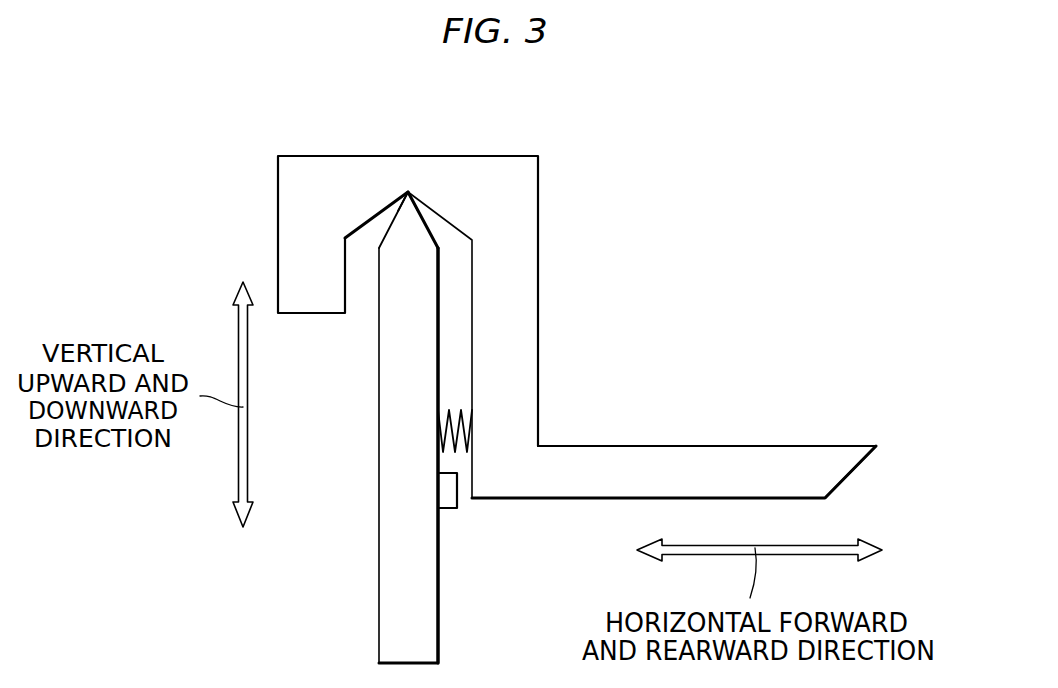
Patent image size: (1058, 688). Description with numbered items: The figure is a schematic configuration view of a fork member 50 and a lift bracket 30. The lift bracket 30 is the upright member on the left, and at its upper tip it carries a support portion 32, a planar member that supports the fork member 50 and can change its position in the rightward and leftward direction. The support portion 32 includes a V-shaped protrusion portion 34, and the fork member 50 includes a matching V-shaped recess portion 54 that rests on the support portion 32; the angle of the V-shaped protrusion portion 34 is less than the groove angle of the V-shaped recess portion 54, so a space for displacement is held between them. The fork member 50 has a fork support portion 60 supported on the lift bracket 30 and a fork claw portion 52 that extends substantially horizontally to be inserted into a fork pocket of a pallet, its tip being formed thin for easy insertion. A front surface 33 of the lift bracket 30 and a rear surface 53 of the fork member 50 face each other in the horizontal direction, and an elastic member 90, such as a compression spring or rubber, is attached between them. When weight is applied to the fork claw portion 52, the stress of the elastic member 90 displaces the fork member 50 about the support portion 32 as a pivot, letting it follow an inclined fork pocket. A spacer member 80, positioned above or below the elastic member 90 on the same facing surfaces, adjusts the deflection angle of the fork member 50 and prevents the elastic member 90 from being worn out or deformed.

The lift bracket 30 is at (387, 540).
The support portion 32 is at (409, 193).
The front surface 33 is at (438, 328).
The V-shaped protrusion portion 34 is at (430, 233).
The fork member 50 is at (517, 192).
The fork claw portion 52 is at (812, 458).
The rear surface 53 is at (472, 284).
The V-shaped recess portion 54 is at (373, 222).
The fork support portion 60 is at (293, 181).
The spacer member 80 is at (452, 485).
The elastic member 90 is at (457, 412).